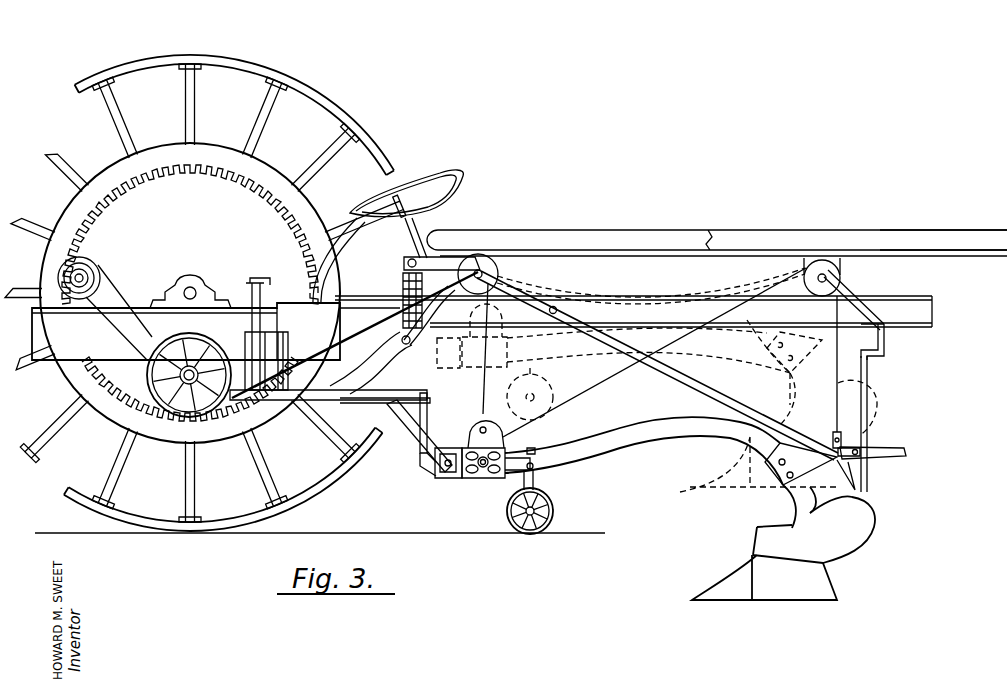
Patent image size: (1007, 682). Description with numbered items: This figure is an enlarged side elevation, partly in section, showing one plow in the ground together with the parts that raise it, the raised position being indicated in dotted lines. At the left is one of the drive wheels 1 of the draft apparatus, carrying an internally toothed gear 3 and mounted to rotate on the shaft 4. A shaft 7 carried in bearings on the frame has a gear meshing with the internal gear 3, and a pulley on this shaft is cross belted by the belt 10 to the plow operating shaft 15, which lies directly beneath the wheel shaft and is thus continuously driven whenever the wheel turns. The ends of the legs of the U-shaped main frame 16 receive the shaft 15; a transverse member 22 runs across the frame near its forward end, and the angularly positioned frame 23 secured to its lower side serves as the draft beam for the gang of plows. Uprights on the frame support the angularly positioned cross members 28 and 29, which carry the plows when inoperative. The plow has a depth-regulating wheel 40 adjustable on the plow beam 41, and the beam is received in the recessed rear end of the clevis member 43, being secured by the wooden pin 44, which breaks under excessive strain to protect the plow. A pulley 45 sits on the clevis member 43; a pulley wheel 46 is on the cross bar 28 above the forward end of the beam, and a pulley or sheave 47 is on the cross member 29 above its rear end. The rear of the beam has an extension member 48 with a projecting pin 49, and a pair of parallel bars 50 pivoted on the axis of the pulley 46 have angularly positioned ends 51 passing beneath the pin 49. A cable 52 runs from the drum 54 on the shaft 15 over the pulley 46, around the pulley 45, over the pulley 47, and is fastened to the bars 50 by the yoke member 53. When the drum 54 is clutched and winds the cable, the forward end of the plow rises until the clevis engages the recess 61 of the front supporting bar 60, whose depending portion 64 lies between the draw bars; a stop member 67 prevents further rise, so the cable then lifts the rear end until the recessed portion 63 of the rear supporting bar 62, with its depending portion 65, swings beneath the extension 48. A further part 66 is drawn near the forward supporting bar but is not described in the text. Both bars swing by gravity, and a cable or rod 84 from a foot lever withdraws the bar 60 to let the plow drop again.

The drive wheel 1 is at (330, 100).
The internally toothed gear 3 is at (163, 432).
The shaft 4 is at (192, 286).
The shaft 7 is at (86, 266).
The belt 10 is at (122, 293).
The plow operating shaft 15 is at (200, 345).
The main frame 16 is at (932, 312).
The transverse member 22 is at (250, 440).
The angularly positioned frame 23 is at (324, 436).
The cross member 28 is at (508, 236).
The cross member 29 is at (958, 236).
The wheel 40 is at (553, 508).
The plow beam 41 is at (630, 438).
The clevis member 43 is at (450, 480).
The pin 44 is at (481, 478).
The pulley 45 is at (482, 420).
The pulley wheel 46 is at (478, 258).
The pulley or sheave 47 is at (832, 270).
The extension member 48 is at (810, 466).
The pin 49 is at (868, 440).
The parallel bars 50 is at (695, 366).
The angularly positioned ends 51 is at (904, 455).
The cable 52 is at (580, 385).
The yoke member 53 is at (826, 415).
The drum 54 is at (150, 370).
The front supporting bar 60 is at (355, 335).
The recess 61 is at (392, 340).
The rear supporting bar 62 is at (865, 305).
The recessed portion 63 is at (884, 350).
The depending portion 64 is at (430, 420).
The depending portion 65 is at (862, 452).
The bar 66 is at (420, 470).
The stop member 67 is at (404, 292).
The cable or rod 84 is at (229, 339).